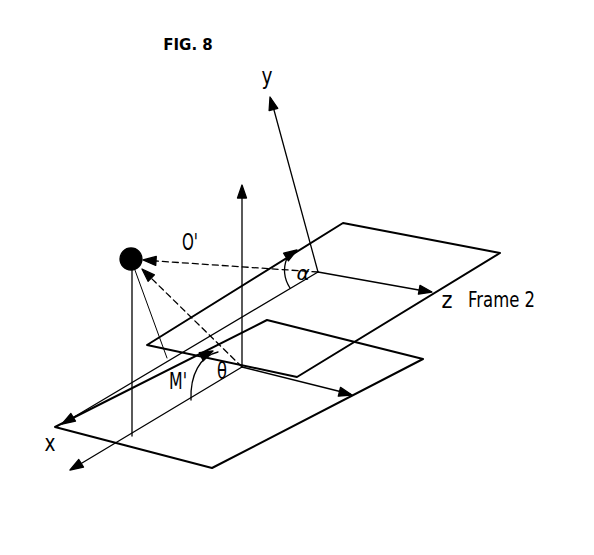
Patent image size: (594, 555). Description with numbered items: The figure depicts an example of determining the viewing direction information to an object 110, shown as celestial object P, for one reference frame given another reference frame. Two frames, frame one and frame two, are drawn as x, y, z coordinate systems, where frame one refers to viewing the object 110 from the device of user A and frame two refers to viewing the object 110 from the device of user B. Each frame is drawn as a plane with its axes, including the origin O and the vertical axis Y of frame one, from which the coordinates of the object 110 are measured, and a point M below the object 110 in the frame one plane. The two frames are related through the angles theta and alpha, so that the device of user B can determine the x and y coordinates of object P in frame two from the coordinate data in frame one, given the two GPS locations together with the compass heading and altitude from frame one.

The object 110 is at (113, 236).
The projection of P onto Frame 1 plane M is at (147, 358).
The origin of Frame 1 O is at (216, 389).
The Y axis of Frame 1 Y is at (242, 259).